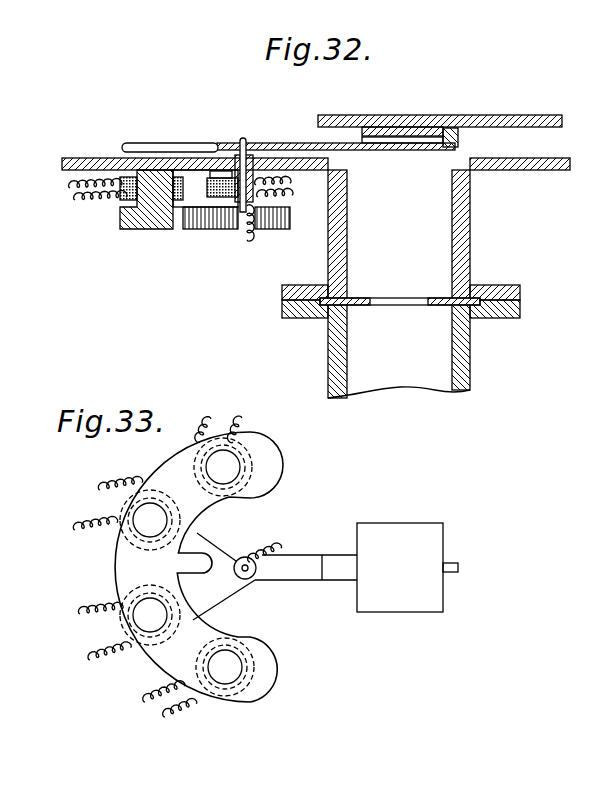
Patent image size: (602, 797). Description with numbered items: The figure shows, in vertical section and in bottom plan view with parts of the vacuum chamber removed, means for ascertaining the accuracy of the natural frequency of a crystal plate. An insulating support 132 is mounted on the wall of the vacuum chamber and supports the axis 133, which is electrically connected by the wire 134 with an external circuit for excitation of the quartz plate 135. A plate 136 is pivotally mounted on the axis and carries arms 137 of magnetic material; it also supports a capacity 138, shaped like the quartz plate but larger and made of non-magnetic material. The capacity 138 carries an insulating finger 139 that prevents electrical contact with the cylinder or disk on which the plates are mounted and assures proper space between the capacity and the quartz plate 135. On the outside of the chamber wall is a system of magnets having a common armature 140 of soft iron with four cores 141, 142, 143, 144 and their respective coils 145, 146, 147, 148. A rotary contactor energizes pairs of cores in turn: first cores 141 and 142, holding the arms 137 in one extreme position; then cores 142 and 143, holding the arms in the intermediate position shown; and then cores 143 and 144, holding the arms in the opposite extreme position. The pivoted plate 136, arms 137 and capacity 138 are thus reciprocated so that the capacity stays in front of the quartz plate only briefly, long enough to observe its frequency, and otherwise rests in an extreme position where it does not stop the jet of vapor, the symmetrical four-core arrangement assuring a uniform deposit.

In FIG. 32, the insulating support 132 is at (240, 205).
In FIG. 32, the axis 133 is at (250, 144).
In FIG. 32, the wire 134 is at (248, 244).
In FIG. 32, the quartz plate 135 is at (393, 134).
In FIG. 32, the plate 136 is at (237, 135).
In FIG. 33, the plate 136 is at (295, 556).
In FIG. 32, the arms 137 is at (132, 144).
In FIG. 33, the arms 137 is at (205, 537).
In FIG. 32, the capacity 138 is at (410, 148).
In FIG. 33, the capacity 138 is at (407, 567).
In FIG. 32, the insulating finger 139 is at (460, 143).
In FIG. 32, the common armature 140 is at (152, 222).
In FIG. 33, the common armature 140 is at (199, 567).
In FIG. 33, the core 141 is at (223, 675).
In FIG. 33, the core 142 is at (140, 617).
In FIG. 32, the core 143 is at (130, 196).
In FIG. 33, the core 143 is at (150, 518).
In FIG. 32, the core 144 is at (215, 210).
In FIG. 33, the core 144 is at (235, 460).
In FIG. 33, the coil 145 is at (245, 690).
In FIG. 33, the coil 146 is at (135, 585).
In FIG. 32, the coil 147 is at (183, 177).
In FIG. 33, the coil 147 is at (137, 548).
In FIG. 32, the coil 148 is at (282, 190).
In FIG. 33, the coil 148 is at (253, 467).